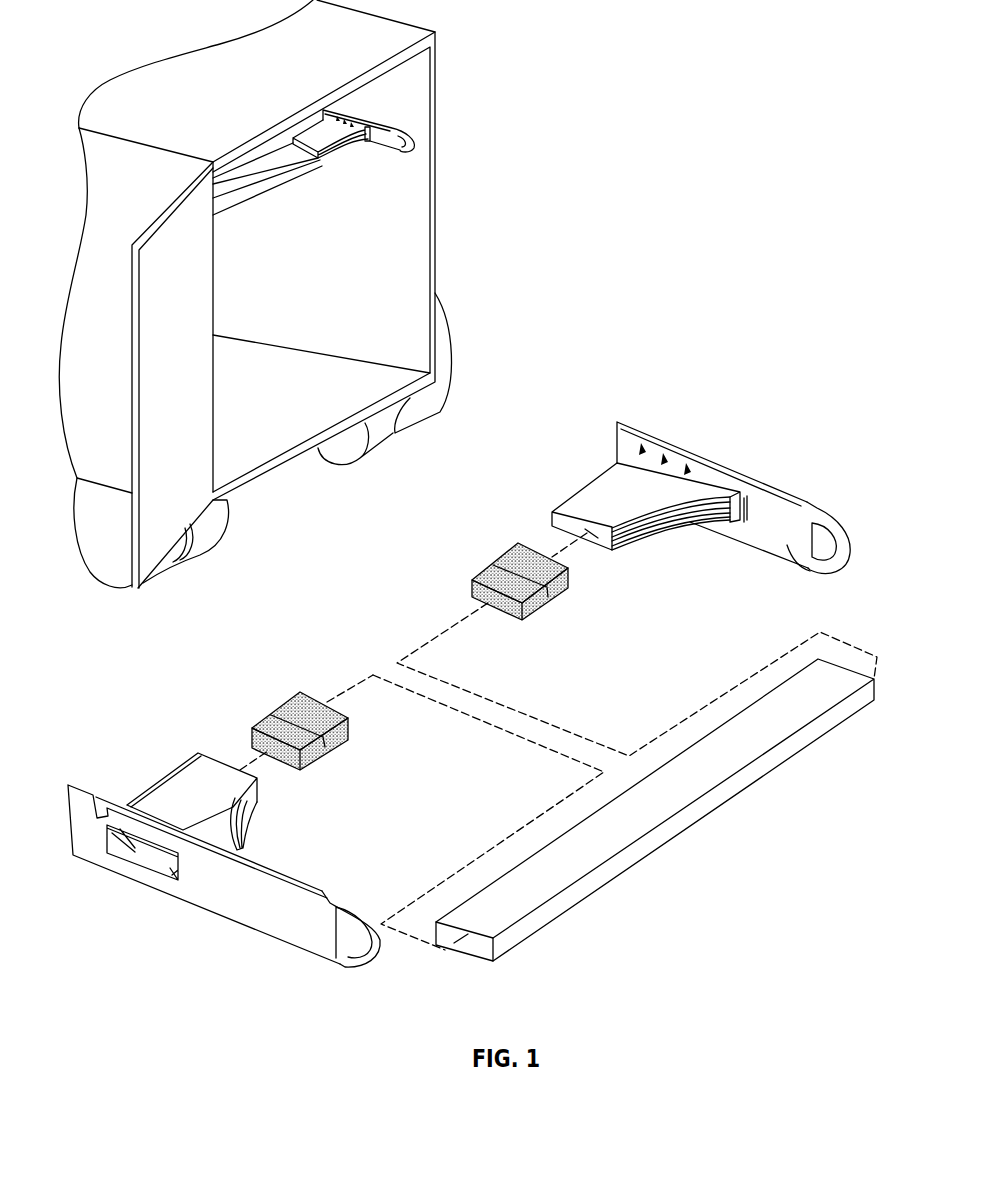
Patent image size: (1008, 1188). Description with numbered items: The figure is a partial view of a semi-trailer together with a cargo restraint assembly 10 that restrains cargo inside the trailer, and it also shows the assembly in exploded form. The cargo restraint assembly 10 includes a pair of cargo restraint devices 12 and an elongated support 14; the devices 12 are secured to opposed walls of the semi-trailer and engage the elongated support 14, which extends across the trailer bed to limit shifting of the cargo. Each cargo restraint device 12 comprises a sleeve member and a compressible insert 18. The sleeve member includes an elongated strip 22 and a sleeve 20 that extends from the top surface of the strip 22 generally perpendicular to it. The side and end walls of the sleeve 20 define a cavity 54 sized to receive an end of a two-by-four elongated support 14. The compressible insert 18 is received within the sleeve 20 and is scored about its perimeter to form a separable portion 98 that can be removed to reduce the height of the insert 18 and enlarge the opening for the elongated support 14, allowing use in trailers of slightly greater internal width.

The cargo restraint assembly 10 is at (742, 496).
The cargo restraint device 12 is at (776, 484).
The elongated support 14 is at (769, 759).
The compressible insert 18 is at (488, 565).
The sleeve 20 is at (590, 495).
The elongated strip 22 is at (713, 460).
The cavity 54 is at (598, 550).
The separable portion 98 is at (410, 640).